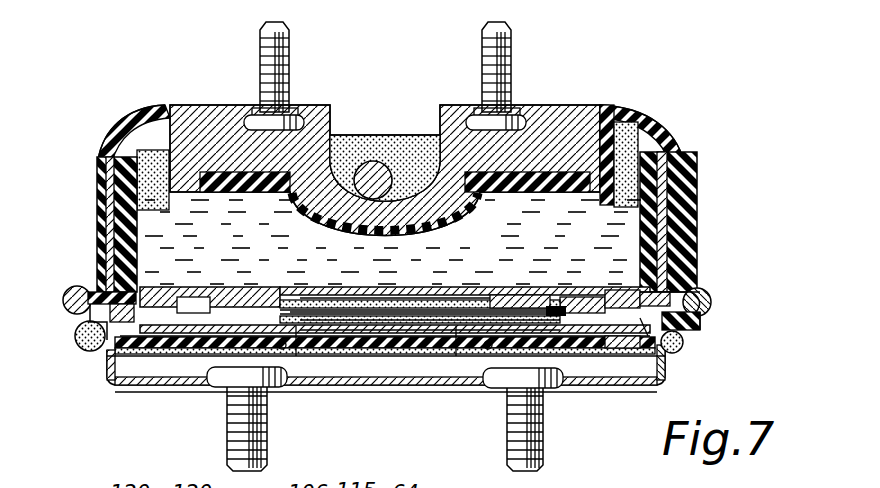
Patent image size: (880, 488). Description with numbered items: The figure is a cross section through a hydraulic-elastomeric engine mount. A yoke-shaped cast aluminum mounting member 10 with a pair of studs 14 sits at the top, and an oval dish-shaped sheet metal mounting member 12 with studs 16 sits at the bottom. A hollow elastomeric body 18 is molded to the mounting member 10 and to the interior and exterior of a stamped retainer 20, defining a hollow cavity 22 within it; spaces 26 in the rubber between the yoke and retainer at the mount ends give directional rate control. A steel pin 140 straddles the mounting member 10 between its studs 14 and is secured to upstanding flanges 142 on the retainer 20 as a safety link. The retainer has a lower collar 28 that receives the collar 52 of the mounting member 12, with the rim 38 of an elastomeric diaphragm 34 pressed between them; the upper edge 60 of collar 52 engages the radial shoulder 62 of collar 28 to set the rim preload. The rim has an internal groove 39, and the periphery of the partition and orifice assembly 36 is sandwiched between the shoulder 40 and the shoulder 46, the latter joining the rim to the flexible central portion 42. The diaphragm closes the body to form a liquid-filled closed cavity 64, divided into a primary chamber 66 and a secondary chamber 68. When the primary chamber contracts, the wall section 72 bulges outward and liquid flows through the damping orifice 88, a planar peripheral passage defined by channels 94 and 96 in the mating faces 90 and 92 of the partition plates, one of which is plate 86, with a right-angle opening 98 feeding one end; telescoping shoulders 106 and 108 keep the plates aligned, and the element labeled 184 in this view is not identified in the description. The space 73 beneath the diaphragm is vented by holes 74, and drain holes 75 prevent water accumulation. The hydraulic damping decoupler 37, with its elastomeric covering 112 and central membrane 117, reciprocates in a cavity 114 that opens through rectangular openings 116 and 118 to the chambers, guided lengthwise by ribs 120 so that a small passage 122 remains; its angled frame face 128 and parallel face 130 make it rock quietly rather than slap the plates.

The mounting member 10 is at (545, 112).
The mounting member 12 is at (669, 371).
The studs 14 is at (288, 30).
The studs 16 is at (240, 433).
The elastomeric body 18 is at (146, 115).
The retainer 20 is at (104, 206).
The hollow cavity 22 is at (140, 228).
The spaces 26 is at (140, 148).
The collar 28 is at (702, 318).
The elastomeric diaphragm 34 is at (203, 356).
The partition and orifice assembly 36 is at (187, 280).
The hydraulic damping decoupler 37 is at (446, 303).
The rim section 38 is at (93, 343).
The internal groove 39 is at (682, 290).
The shoulder 40 is at (692, 300).
The central portion 42 is at (428, 355).
The shoulder 46 is at (684, 342).
The collar 52 is at (703, 330).
The upper edge 60 is at (85, 286).
The radial shoulder 62 is at (80, 331).
The closed cavity 64 is at (668, 196).
The primary chamber 66 is at (668, 225).
The secondary chamber 68 is at (413, 338).
The wall section 72 is at (140, 122).
The space 73 is at (190, 372).
The holes 74 is at (318, 360).
The drain holes 75 is at (141, 388).
The partition plate 86 is at (637, 320).
The damping orifice 88 is at (667, 276).
The mating face 90 is at (148, 318).
The mating face 92 is at (103, 290).
The channel 94 is at (622, 297).
The channel 96 is at (613, 351).
The right-angle opening 98 is at (150, 293).
The shoulder 106 is at (170, 305).
The shoulder 108 is at (106, 349).
The elastomeric covering 112 is at (491, 302).
The cavity 114 is at (298, 300).
The rectangular opening 116 is at (273, 295).
The flexible membrane 117 is at (393, 305).
The rectangular opening 118 is at (321, 338).
The guide ribs 120 is at (240, 300).
The passage 122 is at (283, 348).
The face 128 is at (330, 305).
The face 130 is at (389, 338).
The steel pin 140 is at (363, 148).
The upstanding flanges 142 is at (398, 148).
The stop 184 is at (556, 302).